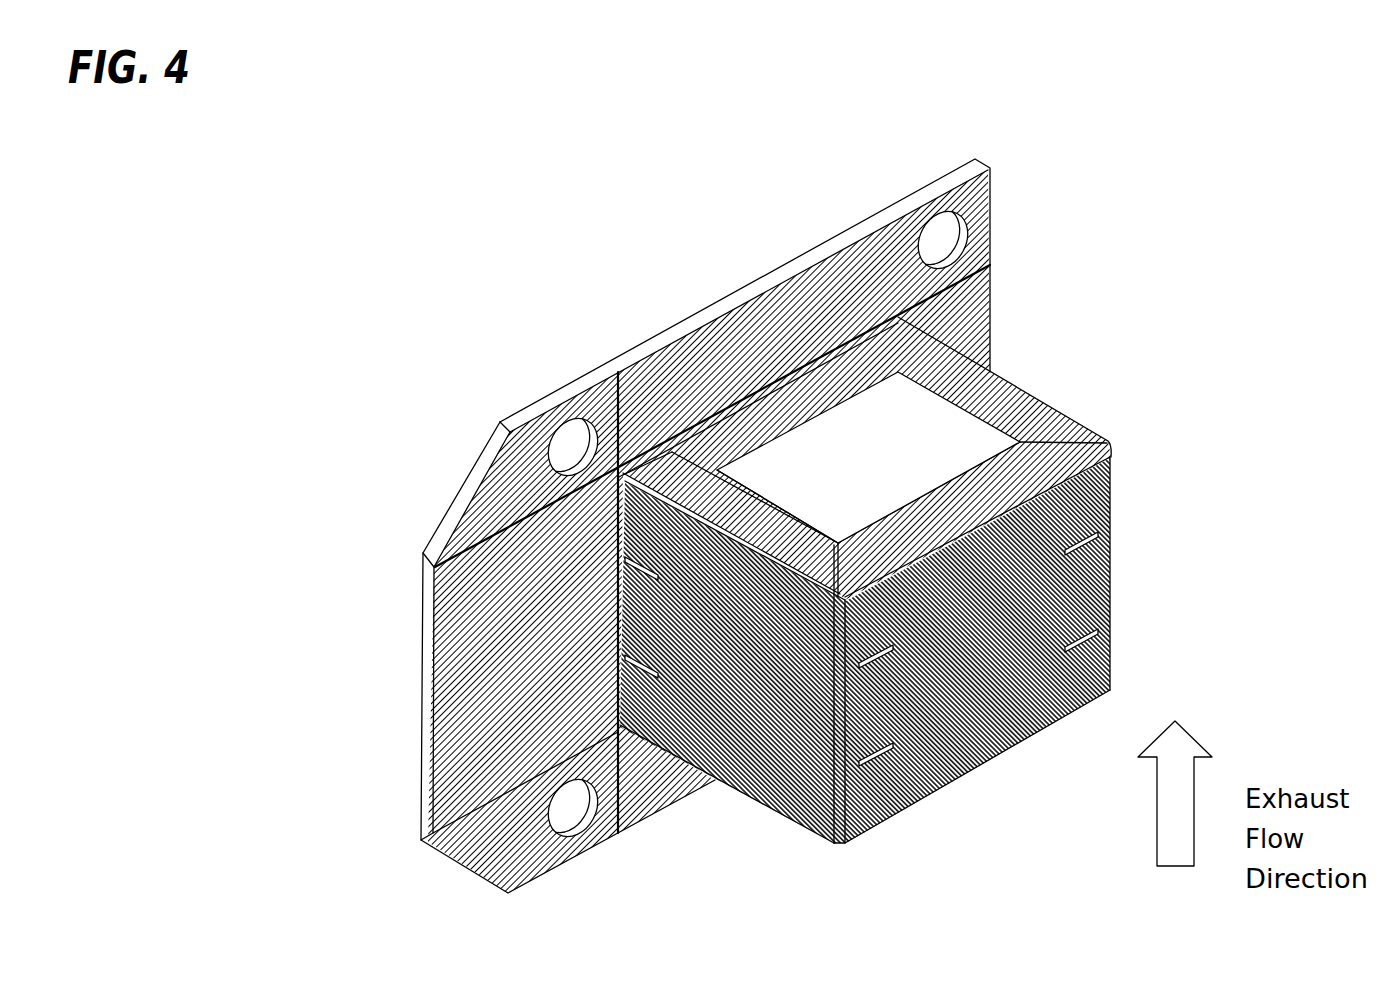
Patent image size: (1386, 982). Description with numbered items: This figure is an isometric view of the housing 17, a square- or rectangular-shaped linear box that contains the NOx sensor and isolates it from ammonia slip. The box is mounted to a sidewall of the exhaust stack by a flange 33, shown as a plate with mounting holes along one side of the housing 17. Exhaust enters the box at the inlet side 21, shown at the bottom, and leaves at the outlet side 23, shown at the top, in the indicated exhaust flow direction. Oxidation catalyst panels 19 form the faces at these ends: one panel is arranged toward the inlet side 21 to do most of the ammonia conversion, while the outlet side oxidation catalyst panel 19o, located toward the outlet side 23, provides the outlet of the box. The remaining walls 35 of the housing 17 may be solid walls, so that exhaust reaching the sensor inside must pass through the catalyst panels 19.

The housing 17 is at (790, 555).
The oxidation catalyst panel 19 is at (745, 593).
The outlet side oxidation catalyst panel 19o is at (597, 389).
The inlet side 21 is at (910, 807).
The outlet side 23 is at (957, 373).
The flange 33 is at (488, 630).
The wall 35 is at (737, 698).